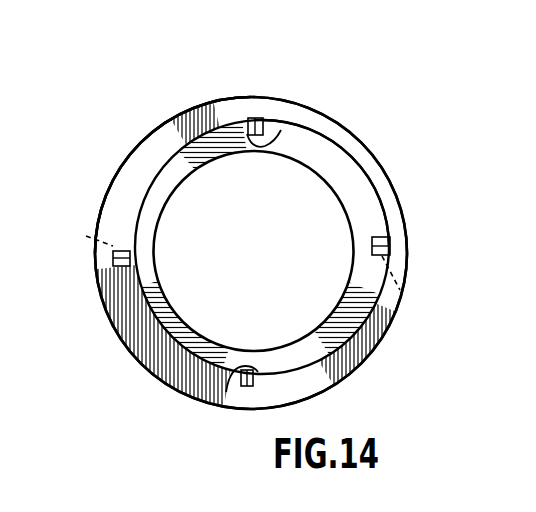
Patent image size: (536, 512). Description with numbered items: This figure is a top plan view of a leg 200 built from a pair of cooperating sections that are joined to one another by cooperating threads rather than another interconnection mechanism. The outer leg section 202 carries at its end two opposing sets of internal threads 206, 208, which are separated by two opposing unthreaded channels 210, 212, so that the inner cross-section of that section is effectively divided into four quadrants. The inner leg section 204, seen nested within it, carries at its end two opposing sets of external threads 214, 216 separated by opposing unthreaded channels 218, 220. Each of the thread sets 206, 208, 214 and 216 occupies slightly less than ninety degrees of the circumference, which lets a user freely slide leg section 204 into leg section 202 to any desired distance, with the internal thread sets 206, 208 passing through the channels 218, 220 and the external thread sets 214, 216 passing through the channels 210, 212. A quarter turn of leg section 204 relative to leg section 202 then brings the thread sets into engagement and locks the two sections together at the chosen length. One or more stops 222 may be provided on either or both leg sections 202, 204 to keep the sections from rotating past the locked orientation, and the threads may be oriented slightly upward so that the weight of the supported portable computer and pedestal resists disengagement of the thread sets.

The leg 200 is at (150, 72).
The leg section 202 is at (93, 262).
The leg section 204 is at (292, 340).
The internal threads 206 is at (148, 153).
The internal threads 208 is at (327, 372).
The unthreaded channel 210 is at (233, 392).
The unthreaded channel 212 is at (290, 120).
The external threads 214 is at (152, 378).
The external threads 216 is at (358, 176).
The unthreaded channel 218 is at (106, 267).
The unthreaded channel 220 is at (392, 245).
The stop 222 is at (408, 296).